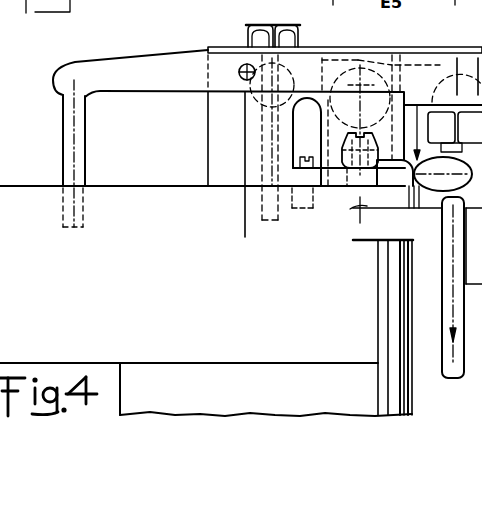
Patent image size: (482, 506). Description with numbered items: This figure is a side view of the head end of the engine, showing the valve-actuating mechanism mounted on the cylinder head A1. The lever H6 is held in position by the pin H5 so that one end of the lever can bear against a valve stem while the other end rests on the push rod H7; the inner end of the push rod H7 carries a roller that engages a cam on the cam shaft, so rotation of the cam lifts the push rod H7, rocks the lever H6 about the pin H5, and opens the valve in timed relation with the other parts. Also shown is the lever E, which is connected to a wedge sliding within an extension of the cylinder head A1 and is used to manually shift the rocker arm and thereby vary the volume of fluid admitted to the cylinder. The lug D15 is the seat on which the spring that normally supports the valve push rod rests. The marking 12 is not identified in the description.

The post 12 is at (42, 153).
The lever H6 is at (155, 78).
The pin H5 is at (241, 78).
The lever E is at (452, 177).
The lug D15 is at (390, 228).
The cylinder head A1 is at (206, 301).
The push rod H7 is at (452, 298).